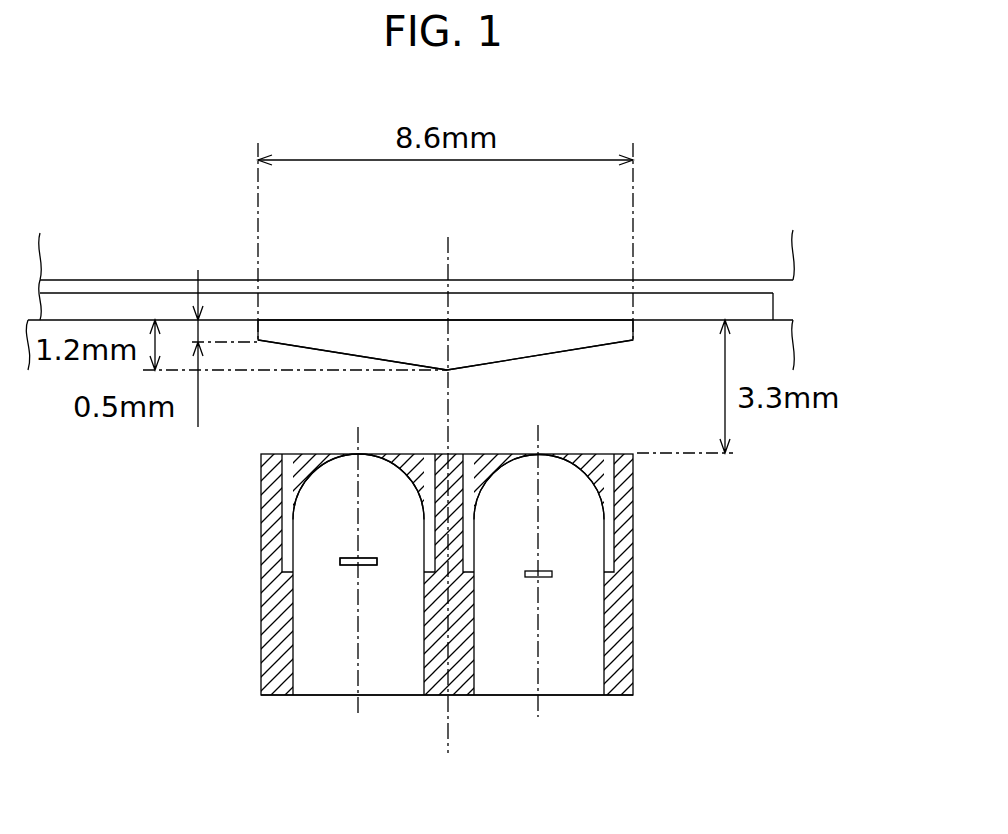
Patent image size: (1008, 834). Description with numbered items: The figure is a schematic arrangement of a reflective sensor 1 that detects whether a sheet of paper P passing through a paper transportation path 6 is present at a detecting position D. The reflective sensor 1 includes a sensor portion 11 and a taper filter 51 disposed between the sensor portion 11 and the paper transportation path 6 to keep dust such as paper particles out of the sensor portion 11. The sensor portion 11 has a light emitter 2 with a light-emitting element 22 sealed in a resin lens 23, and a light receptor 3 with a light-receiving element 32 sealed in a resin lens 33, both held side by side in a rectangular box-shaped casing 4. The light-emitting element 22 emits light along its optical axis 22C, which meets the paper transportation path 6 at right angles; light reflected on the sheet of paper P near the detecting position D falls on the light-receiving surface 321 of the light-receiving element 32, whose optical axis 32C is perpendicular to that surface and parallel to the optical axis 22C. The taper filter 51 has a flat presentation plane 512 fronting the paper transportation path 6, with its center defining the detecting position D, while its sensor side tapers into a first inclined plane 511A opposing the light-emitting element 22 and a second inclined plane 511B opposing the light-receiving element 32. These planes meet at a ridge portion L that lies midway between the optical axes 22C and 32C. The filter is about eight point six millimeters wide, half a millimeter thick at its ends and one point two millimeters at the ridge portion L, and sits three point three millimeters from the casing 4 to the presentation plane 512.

The reflective sensor 1 is at (808, 440).
The sensor portion 11 is at (668, 674).
The light emitter 2 is at (600, 480).
The light-emitting element 22 is at (540, 578).
The optical axis of the light-emitting element 22C is at (561, 590).
The lens 23 is at (484, 484).
The light receptor 3 is at (296, 483).
The light-receiving element 32 is at (352, 568).
The light-receiving surface 321 is at (343, 557).
The optical axis of the light-receiving element 32C is at (381, 591).
The lens 33 is at (323, 463).
The casing 4 is at (633, 588).
The taper filter 51 is at (649, 346).
The first inclined plane 511A is at (553, 353).
The second inclined plane 511B is at (347, 355).
The presentation plane 512 is at (503, 320).
The paper transportation path 6 is at (120, 293).
The sheet of paper P is at (760, 307).
The detecting position D is at (447, 320).
The ridge portion L is at (447, 372).